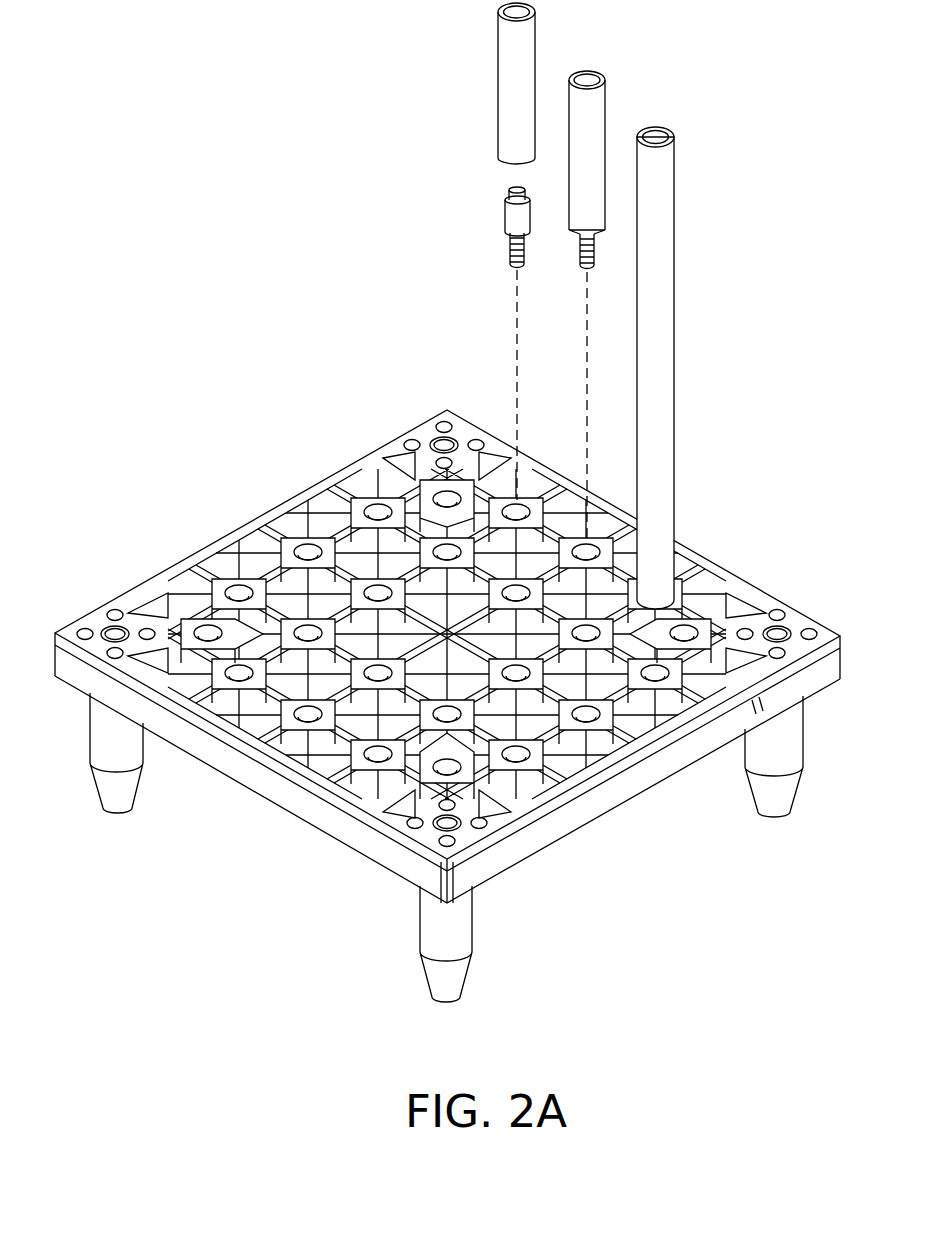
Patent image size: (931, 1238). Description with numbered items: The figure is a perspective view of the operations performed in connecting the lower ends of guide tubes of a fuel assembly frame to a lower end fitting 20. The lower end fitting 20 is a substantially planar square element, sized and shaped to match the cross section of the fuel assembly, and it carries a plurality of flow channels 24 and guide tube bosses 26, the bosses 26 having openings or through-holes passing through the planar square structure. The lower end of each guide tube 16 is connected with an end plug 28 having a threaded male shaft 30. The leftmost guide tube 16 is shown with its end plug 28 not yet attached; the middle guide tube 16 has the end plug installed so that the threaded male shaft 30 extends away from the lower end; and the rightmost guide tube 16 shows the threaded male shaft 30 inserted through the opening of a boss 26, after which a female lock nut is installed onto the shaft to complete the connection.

The guide tube 16 is at (515, 53).
The lower end fitting 20 is at (318, 812).
The flow channels 24 is at (323, 563).
The guide tube bosses 26 is at (498, 512).
The end plug 28 is at (470, 231).
The threaded male shaft 30 is at (578, 260).